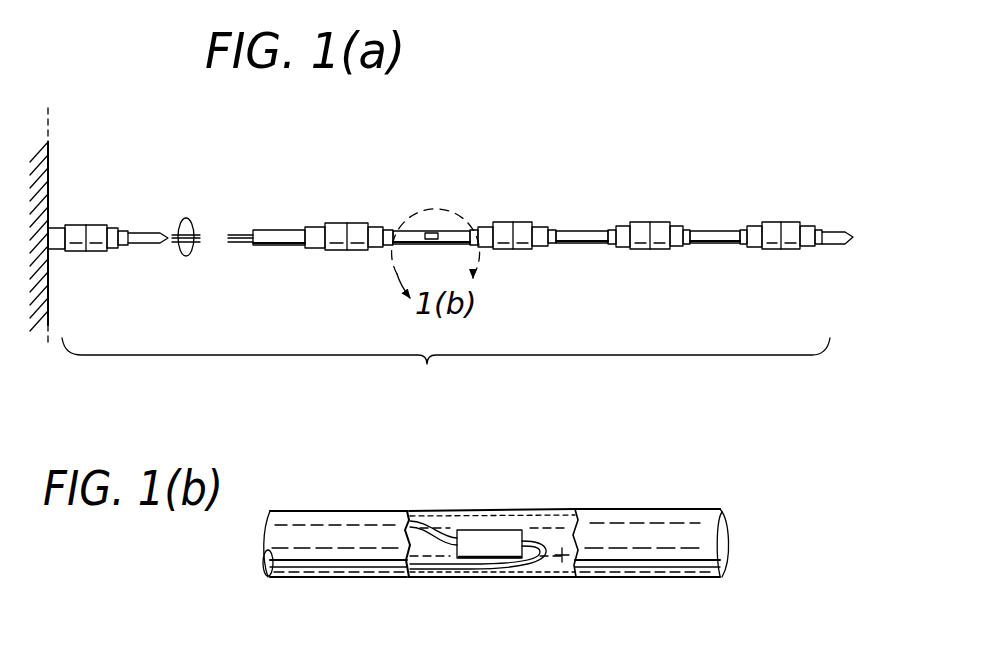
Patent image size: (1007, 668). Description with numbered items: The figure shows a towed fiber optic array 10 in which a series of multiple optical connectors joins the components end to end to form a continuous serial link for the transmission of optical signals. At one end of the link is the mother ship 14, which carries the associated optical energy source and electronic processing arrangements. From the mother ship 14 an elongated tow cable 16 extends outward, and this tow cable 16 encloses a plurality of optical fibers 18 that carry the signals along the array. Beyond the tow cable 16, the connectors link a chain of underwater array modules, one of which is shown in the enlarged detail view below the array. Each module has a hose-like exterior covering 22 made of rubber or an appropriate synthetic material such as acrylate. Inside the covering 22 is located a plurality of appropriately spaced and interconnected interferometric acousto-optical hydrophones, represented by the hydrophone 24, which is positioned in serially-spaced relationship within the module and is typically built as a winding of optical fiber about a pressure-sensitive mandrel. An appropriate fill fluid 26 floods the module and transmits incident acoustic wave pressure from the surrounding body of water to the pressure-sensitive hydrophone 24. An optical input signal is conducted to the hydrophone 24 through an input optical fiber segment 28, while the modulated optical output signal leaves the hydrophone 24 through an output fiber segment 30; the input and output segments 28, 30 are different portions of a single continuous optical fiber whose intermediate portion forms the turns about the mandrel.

In FIG. 1A, the fiber optic array 10 is at (446, 368).
In FIG. 1A, the mother ship 14 is at (48, 160).
In FIG. 1A, the tow cable 16 is at (138, 246).
In FIG. 1A, the optical fibers 18 is at (186, 258).
In FIG. 1A, the hose-like exterior covering 22 is at (393, 241).
In FIG. 1B, the hose-like exterior covering 22 is at (325, 545).
In FIG. 1A, the hydrophone 24 is at (430, 233).
In FIG. 1B, the hydrophone 24 is at (498, 540).
In FIG. 1B, the fill fluid 26 is at (563, 563).
In FIG. 1B, the input optical fiber segment 28 is at (440, 522).
In FIG. 1B, the output fiber segment 30 is at (430, 578).